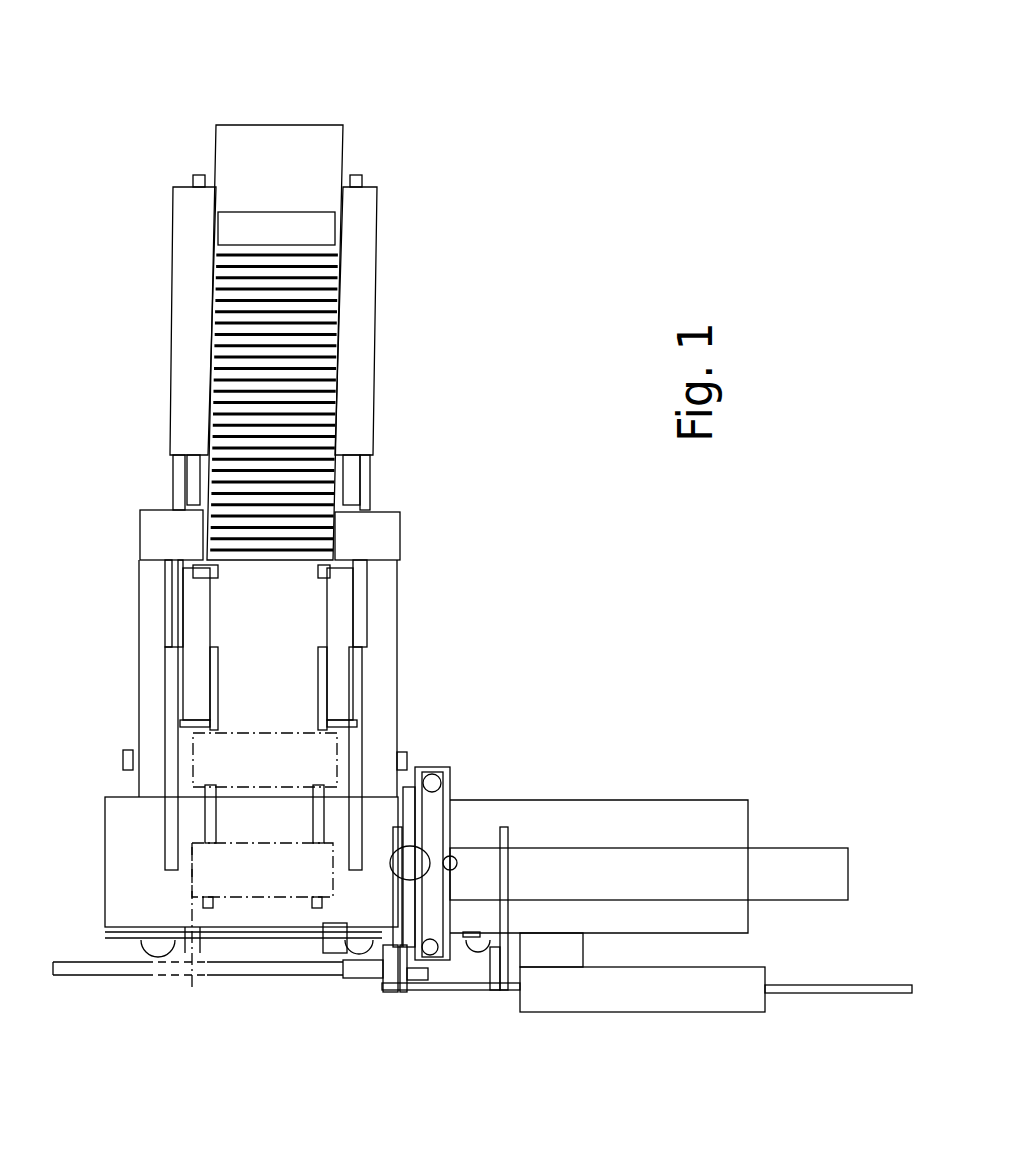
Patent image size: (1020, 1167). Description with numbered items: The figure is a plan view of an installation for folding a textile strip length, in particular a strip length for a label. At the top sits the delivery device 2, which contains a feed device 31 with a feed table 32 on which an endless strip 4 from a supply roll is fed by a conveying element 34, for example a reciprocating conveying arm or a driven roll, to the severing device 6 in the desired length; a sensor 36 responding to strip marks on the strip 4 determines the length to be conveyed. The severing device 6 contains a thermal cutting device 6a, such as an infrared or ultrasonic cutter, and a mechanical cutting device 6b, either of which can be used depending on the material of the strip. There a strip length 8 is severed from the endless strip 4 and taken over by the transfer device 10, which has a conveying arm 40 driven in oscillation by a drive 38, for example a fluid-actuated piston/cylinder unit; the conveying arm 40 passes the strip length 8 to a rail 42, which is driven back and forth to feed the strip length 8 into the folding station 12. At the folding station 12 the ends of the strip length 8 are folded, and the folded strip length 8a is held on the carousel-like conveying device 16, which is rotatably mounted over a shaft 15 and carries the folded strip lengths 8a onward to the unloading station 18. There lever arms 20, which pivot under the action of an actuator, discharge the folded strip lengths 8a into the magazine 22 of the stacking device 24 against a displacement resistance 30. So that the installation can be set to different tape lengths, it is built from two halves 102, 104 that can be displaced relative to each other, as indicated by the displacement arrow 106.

The delivery device 2 is at (577, 718).
The endless strip 4 is at (800, 865).
The severing device 6 is at (421, 734).
The thermal cutting device 6a is at (440, 770).
The mechanical cutting device 6b is at (420, 770).
The strip length 8 is at (265, 877).
The folded strip length 8a is at (283, 252).
The transfer device 10 is at (186, 1025).
The folding station 12 is at (258, 729).
The shaft 15 is at (123, 760).
The carousel-like conveying device 16 is at (322, 622).
The unloading station 18 is at (434, 543).
The lever arms 20 is at (318, 572).
The magazine 22 is at (338, 418).
The stacking device 24 is at (231, 90).
The displacement resistance 30 is at (328, 232).
The feed device 31 is at (649, 792).
The feed table 32 is at (703, 815).
The conveying element 34 is at (510, 862).
The sensor 36 is at (453, 858).
The drive 38 is at (627, 1000).
The conveying arm 40 is at (368, 950).
The rail 42 is at (312, 822).
The first installation half 102 is at (161, 150).
The second installation half 104 is at (378, 132).
The displacement arrow 106 is at (217, 580).